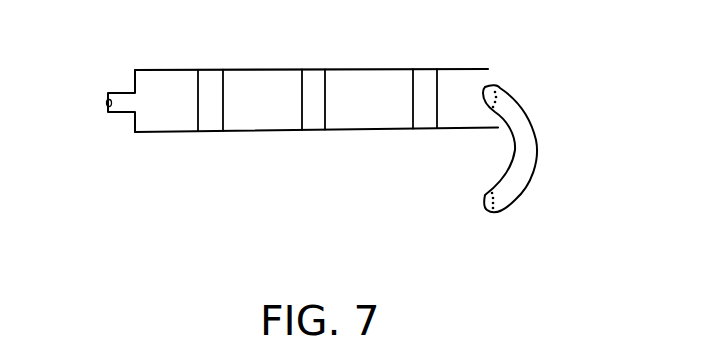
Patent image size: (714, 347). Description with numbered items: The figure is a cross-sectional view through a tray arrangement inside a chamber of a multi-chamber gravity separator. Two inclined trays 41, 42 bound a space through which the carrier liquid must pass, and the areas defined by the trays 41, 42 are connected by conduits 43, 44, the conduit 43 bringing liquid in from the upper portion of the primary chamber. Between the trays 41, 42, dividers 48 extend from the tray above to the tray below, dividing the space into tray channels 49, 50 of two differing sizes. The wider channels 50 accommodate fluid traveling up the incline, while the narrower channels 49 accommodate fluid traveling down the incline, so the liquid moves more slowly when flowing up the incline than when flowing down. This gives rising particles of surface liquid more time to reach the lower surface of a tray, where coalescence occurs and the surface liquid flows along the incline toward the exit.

The tray 41 is at (492, 67).
The tray 42 is at (473, 128).
The conduit 43 is at (106, 107).
The conduit 44 is at (538, 166).
The divider 48 is at (223, 86).
The tray channel 49 is at (210, 113).
The tray channel 50 is at (265, 115).